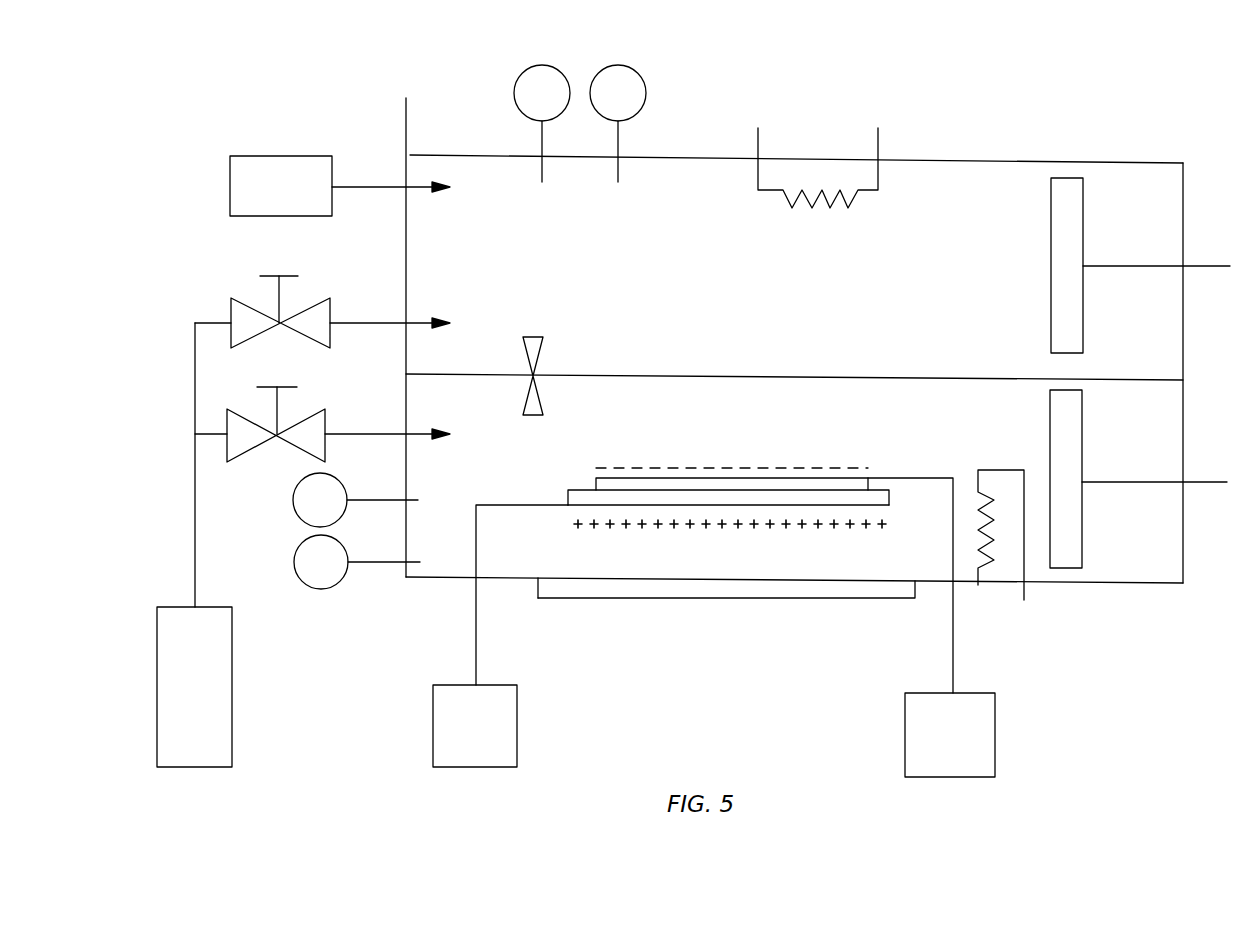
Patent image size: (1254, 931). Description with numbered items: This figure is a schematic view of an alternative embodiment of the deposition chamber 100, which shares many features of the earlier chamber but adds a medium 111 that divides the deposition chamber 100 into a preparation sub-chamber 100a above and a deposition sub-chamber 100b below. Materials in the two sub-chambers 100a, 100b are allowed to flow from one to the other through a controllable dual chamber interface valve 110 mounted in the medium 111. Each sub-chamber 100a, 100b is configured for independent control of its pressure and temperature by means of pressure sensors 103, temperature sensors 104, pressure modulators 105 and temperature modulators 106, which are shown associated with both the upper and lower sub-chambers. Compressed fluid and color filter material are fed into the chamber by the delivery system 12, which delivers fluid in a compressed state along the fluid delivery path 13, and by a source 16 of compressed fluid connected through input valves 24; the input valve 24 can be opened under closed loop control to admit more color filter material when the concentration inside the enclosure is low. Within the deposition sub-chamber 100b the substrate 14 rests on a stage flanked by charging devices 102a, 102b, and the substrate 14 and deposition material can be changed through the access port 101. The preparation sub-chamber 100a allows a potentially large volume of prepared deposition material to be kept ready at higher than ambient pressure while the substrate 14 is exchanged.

The delivery system 12 is at (280, 156).
The fluid delivery path 13 is at (380, 187).
The input valve 24 is at (308, 346).
The source of compressed fluid 16 is at (218, 731).
The pressure sensor 103 is at (520, 70).
The temperature sensor 104 is at (638, 90).
The temperature modulator 106 is at (800, 190).
The pressure modulator 105 is at (1082, 287).
The deposition chamber 100 is at (1112, 585).
The preparation sub-chamber 100a is at (957, 178).
The deposition sub-chamber 100b is at (438, 577).
The interface valve 110 is at (545, 335).
The medium 111 is at (705, 375).
The substrate 14 is at (667, 497).
The access port 101 is at (620, 597).
The charging device 102a is at (517, 740).
The charging device 102b is at (995, 727).